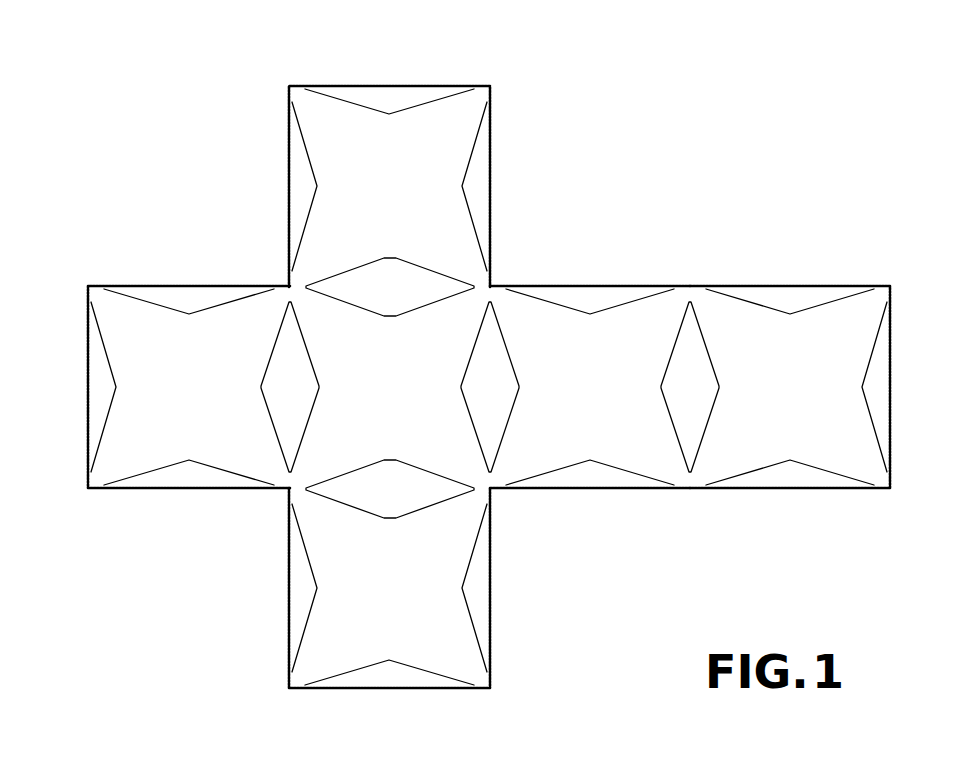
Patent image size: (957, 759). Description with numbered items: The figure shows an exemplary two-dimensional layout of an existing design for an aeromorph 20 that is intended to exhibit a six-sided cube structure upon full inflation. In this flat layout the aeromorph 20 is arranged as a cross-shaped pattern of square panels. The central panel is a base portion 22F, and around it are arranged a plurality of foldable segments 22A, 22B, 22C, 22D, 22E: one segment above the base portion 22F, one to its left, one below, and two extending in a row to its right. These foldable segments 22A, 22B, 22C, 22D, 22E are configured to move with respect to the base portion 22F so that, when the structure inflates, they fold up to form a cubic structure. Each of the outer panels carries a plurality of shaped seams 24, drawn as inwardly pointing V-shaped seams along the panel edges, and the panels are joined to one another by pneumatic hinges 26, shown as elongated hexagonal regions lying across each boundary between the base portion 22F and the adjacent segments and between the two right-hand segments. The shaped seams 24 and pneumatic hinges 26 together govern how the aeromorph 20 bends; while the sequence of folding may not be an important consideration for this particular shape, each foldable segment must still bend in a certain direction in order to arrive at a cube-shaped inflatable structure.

The aeromorph 20 is at (600, 86).
The foldable segment 22A is at (298, 93).
The foldable segment 22B is at (103, 307).
The foldable segment 22C is at (302, 676).
The foldable segment 22D is at (640, 470).
The foldable segment 22E is at (845, 470).
The base portion 22F is at (385, 368).
The shaped seams 24 is at (488, 143).
The pneumatic hinges 26 is at (686, 335).